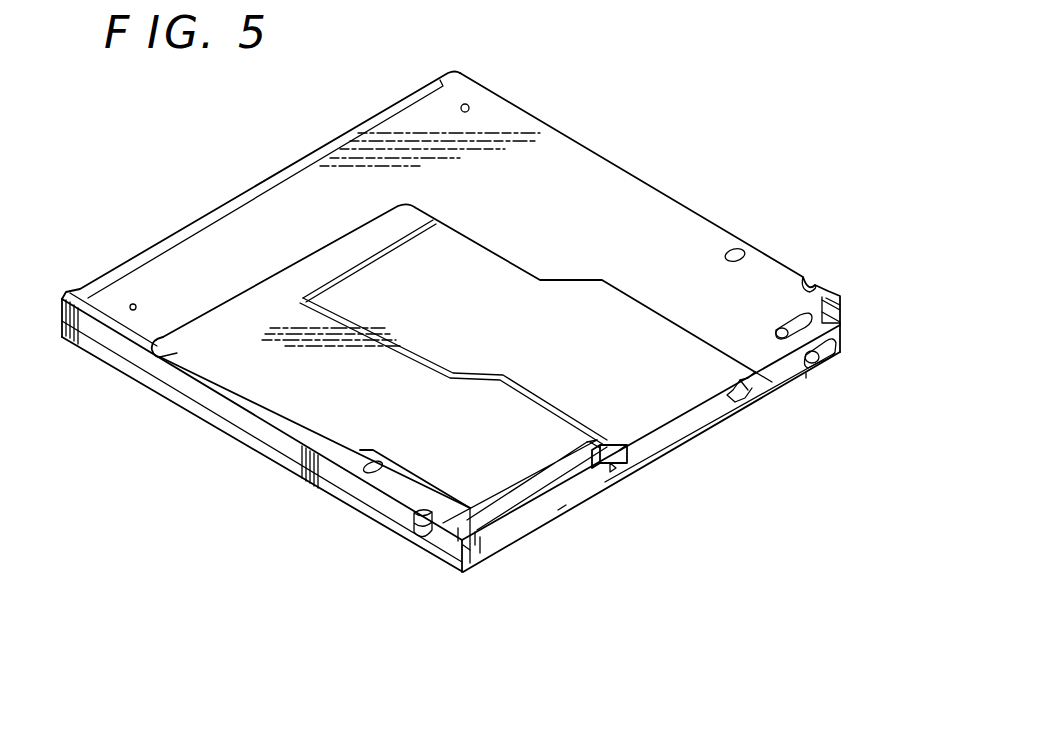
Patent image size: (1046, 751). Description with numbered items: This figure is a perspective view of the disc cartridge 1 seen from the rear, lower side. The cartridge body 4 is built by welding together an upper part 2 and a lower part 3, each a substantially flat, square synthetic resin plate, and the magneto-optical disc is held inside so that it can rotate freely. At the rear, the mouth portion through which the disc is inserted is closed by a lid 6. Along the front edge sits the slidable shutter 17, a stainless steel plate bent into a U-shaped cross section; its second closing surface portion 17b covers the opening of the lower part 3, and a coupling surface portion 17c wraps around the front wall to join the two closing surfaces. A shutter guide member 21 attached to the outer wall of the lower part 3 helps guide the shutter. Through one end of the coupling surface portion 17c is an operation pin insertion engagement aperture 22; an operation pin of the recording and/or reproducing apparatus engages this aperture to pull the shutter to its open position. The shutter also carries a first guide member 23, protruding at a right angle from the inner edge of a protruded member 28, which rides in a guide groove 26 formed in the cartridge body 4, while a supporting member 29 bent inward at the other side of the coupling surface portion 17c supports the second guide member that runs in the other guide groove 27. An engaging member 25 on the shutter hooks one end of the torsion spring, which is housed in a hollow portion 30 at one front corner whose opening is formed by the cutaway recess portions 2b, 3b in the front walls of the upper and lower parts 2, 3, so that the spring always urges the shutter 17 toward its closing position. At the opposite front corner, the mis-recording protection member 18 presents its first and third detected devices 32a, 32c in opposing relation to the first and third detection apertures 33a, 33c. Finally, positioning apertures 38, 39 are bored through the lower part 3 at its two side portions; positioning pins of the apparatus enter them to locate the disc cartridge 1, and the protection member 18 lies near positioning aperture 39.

The disc cartridge 1 is at (660, 168).
The upper part 2 is at (208, 405).
The lower part 3 is at (242, 440).
The cartridge body 4 is at (262, 498).
The cutaway recess portion 2b is at (520, 515).
The cutaway recess portion 3b is at (485, 538).
The lid 6 is at (237, 200).
The slidable shutter 17 is at (618, 286).
The second closing surface portion 17b is at (483, 342).
The coupling surface portion 17c is at (686, 438).
The mis-recording protection member 18 is at (806, 373).
The shutter guide member 21 is at (175, 353).
The operation pin insertion engagement aperture 22 is at (636, 462).
The first guide member 23 is at (595, 443).
The engaging member 25 is at (612, 470).
The guide groove 26 is at (485, 500).
The guide groove 27 is at (748, 392).
The protruded member 28 is at (585, 462).
The supporting member 29 is at (770, 385).
The hollow portion 30 is at (563, 516).
The first detected device 32a is at (815, 360).
The third detected device 32c is at (775, 322).
The first detection aperture 33a is at (822, 346).
The third detection aperture 33c is at (802, 290).
The positioning aperture 38 is at (356, 497).
The positioning aperture 39 is at (740, 253).